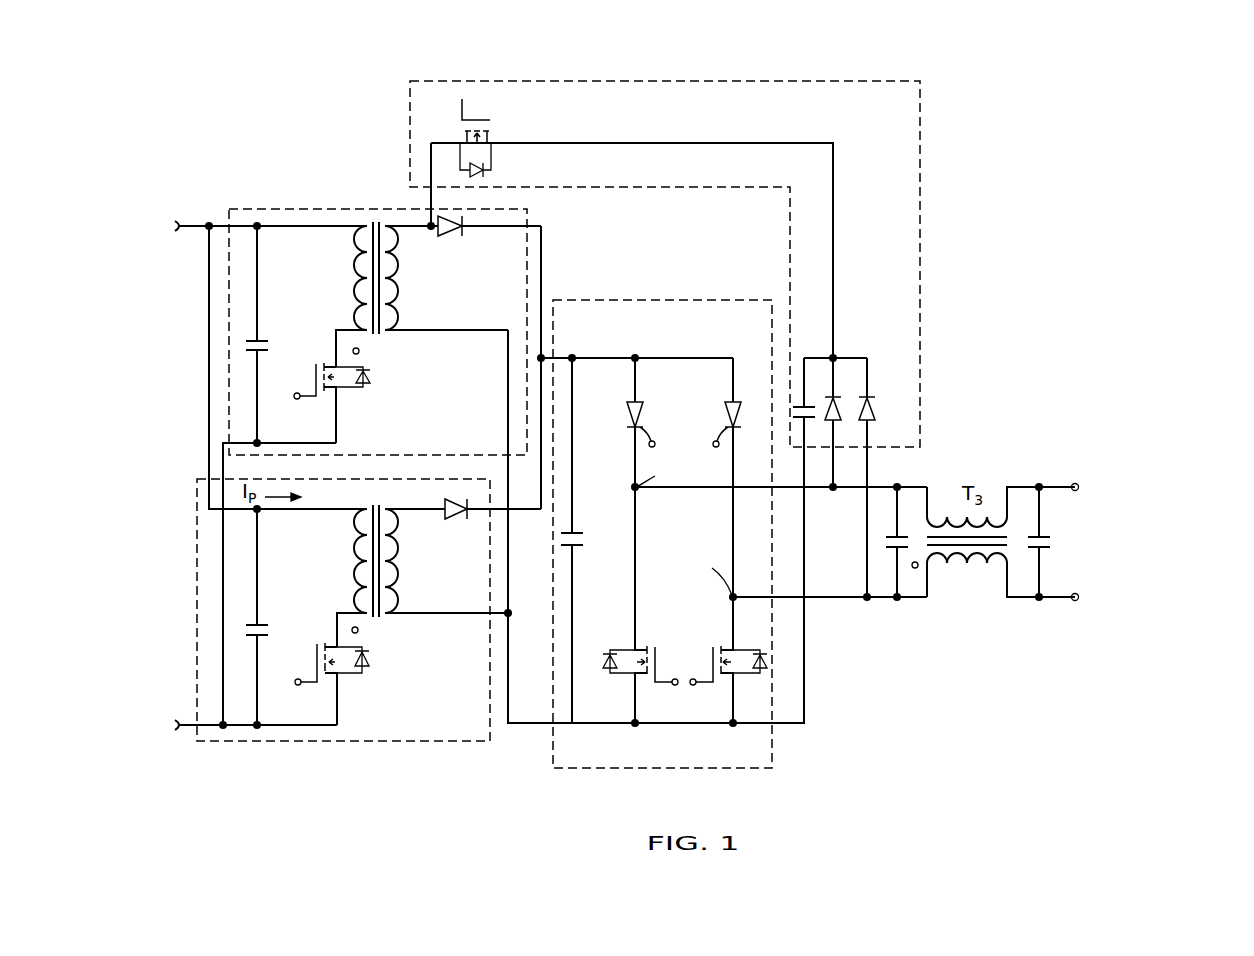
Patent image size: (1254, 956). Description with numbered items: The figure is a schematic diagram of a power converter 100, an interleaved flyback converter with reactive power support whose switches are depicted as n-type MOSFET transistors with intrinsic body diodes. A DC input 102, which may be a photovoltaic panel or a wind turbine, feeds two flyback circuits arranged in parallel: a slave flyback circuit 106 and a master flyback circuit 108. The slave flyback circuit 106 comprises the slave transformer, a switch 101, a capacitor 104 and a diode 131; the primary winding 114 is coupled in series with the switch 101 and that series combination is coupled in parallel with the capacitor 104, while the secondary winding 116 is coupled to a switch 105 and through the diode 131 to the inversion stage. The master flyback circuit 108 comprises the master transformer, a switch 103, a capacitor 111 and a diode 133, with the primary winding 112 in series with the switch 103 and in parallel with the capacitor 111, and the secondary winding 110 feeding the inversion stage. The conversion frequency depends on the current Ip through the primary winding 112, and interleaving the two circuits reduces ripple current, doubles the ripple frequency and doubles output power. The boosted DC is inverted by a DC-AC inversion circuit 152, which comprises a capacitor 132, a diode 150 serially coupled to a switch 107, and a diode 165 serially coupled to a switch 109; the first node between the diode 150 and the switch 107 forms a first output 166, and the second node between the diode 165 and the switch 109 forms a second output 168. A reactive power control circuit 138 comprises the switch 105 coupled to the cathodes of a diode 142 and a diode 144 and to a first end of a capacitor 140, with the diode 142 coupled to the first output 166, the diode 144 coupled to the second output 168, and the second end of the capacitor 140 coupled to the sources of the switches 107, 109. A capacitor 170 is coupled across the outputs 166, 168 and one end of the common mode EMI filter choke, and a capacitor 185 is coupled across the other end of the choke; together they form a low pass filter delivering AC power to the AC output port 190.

The power converter 100 is at (1104, 188).
The switch 101 is at (326, 403).
The DC input 102 is at (152, 456).
The switch 103 is at (335, 680).
The capacitor 104 is at (262, 341).
The switch 105 is at (476, 110).
The flyback circuit 106 is at (283, 209).
The switch 107 is at (660, 660).
The flyback circuit 108 is at (197, 605).
The switch 109 is at (726, 674).
The secondary winding 110 is at (403, 536).
The capacitor 111 is at (262, 626).
The primary winding 112 is at (356, 533).
The primary winding 114 is at (356, 231).
The secondary winding 116 is at (393, 284).
The diode 131 is at (462, 235).
The capacitor 132 is at (577, 533).
The diode 133 is at (455, 497).
The reactive power control circuit 138 is at (719, 82).
The capacitor 140 is at (812, 400).
The diode 142 is at (845, 395).
The diode 144 is at (875, 409).
The diode 150 is at (638, 408).
The DC-AC inversion circuit 152 is at (644, 297).
The diode 165 is at (728, 421).
The first output 166 is at (886, 486).
The second output 168 is at (838, 599).
The capacitor 170 is at (884, 546).
The capacitor 185 is at (1046, 538).
The AC output port 190 is at (1136, 536).